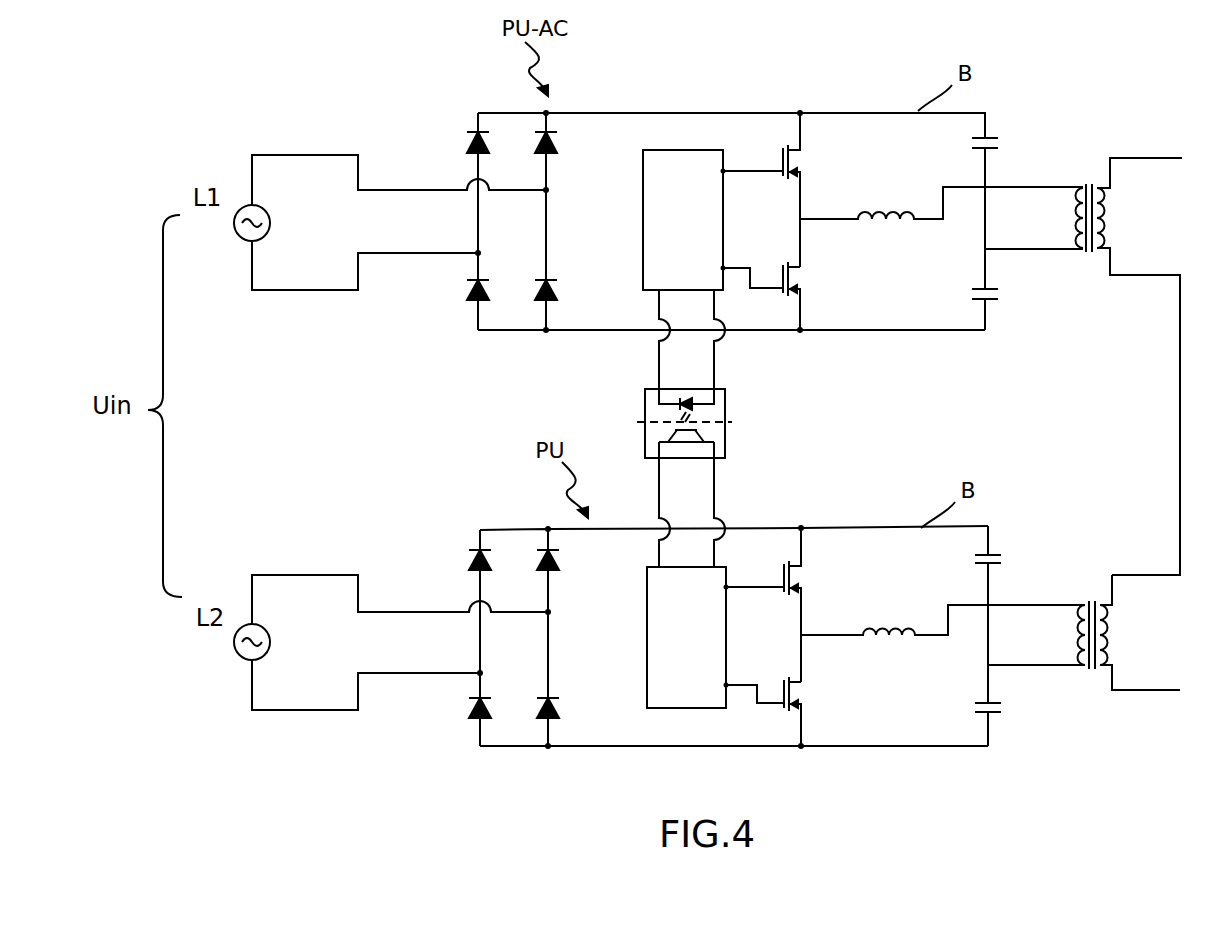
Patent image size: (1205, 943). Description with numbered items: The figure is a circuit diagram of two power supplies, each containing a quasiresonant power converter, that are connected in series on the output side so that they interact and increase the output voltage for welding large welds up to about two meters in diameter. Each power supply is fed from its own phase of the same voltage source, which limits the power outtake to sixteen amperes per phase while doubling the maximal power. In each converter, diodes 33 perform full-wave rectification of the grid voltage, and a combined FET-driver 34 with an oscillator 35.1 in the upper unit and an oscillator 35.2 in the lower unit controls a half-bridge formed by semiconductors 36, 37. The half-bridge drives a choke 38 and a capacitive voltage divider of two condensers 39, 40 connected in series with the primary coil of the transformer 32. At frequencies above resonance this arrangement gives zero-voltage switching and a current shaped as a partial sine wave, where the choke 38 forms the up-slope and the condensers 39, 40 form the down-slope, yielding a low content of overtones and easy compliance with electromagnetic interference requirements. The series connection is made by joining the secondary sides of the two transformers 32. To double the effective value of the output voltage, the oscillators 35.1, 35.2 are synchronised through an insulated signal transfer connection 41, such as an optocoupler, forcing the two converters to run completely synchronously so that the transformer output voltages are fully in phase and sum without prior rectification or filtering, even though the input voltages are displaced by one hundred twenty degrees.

The transformer 32 is at (1082, 188).
The diodes 33 is at (470, 143).
The FET-driver 34 is at (662, 198).
The oscillator 35.1 is at (663, 259).
The oscillator 35.2 is at (666, 677).
The half-bridge semiconductor 36 is at (803, 162).
The half-bridge semiconductor 37 is at (803, 282).
The choke 38 is at (884, 210).
The condenser 39 is at (990, 137).
The condenser 40 is at (990, 300).
The insulated signal transfer connection 41 is at (725, 427).